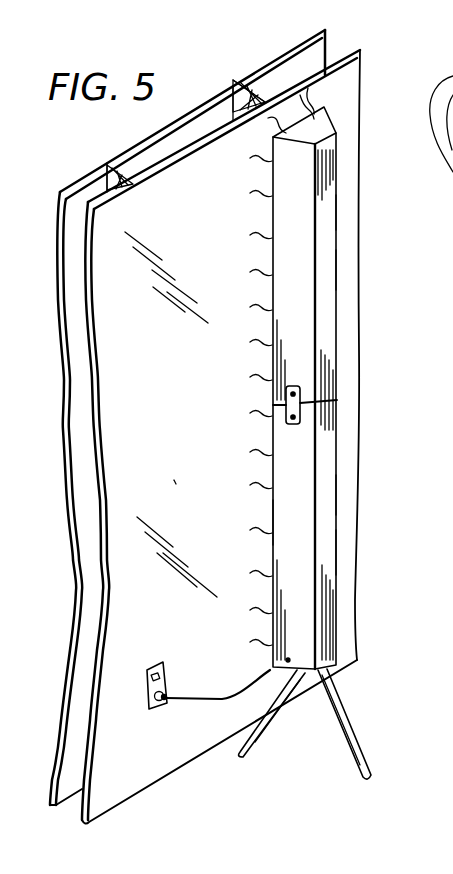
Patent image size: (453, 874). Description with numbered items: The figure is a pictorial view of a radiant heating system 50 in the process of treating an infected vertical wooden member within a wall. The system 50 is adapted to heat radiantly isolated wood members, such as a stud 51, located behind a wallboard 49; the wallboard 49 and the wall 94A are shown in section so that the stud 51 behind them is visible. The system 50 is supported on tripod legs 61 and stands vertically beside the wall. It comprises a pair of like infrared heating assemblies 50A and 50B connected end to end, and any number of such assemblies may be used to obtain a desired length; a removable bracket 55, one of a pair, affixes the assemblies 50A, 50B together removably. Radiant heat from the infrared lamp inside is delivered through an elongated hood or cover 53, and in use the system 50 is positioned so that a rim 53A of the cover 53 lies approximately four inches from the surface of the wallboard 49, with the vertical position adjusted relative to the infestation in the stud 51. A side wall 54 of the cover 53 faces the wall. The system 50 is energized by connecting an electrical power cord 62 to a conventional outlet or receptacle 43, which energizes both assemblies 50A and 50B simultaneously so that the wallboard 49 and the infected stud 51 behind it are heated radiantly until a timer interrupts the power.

The rear panel 94A is at (53, 232).
The wallboard 49 is at (179, 222).
The stud 51 is at (277, 60).
The radiant heating system 50 is at (340, 319).
The infrared heating assembly 50A is at (337, 554).
The infrared heating assembly 50B is at (336, 273).
The hood or cover 53 is at (338, 213).
The rim 53A is at (272, 523).
The column side wall 54 is at (336, 495).
The bracket 55 is at (272, 404).
The tripod legs 61 is at (349, 722).
The outlet or receptacle 43 is at (200, 640).
The electrical power cord 62 is at (194, 702).